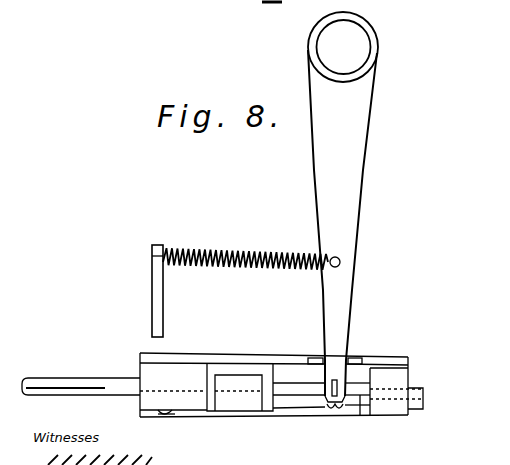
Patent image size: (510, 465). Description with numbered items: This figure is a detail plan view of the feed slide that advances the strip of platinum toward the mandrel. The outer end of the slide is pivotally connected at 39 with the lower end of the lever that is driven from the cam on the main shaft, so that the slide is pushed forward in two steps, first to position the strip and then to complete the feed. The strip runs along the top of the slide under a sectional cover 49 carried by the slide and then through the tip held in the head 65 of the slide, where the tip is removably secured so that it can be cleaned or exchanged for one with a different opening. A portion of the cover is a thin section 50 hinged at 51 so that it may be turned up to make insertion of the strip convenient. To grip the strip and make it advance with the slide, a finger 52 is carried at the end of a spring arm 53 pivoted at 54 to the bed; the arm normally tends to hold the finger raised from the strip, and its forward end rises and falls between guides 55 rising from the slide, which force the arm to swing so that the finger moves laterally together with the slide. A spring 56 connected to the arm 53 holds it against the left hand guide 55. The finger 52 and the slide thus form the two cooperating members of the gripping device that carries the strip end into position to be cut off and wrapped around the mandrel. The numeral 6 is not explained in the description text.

The shaft 6 is at (426, 398).
The pivotal connection 39 is at (81, 363).
The sectional cover 49 is at (305, 405).
The thin section 50 is at (237, 398).
The hinge 51 is at (170, 414).
The finger 52 is at (338, 388).
The spring arm 53 is at (342, 229).
The pivot 54 is at (357, 58).
The guides 55 is at (320, 358).
The spring 56 is at (238, 250).
The head 65 is at (389, 403).